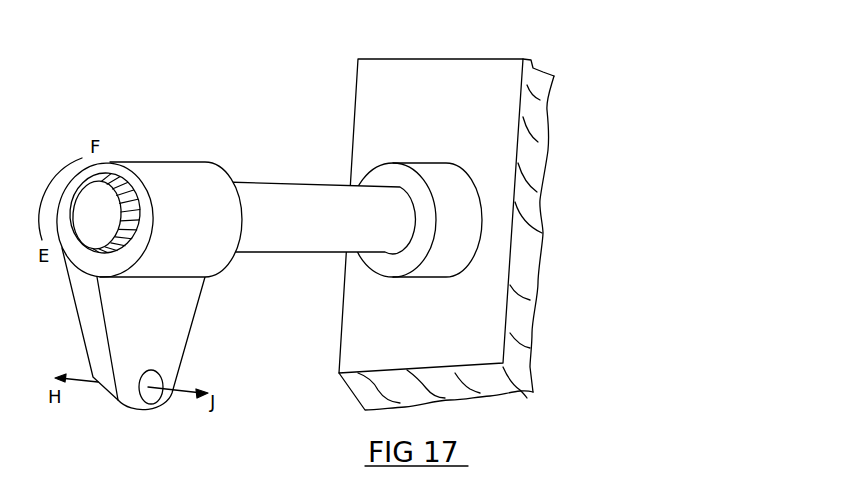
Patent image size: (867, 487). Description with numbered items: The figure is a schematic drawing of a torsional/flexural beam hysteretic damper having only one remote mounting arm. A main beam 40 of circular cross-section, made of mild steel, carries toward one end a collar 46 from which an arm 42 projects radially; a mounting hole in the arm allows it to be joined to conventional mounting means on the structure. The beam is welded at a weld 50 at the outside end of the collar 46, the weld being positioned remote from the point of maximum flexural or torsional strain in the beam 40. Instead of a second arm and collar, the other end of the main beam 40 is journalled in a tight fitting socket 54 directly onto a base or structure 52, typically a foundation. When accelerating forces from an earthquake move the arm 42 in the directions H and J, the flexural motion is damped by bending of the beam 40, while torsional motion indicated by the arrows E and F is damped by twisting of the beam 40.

The main beam 40 is at (295, 190).
The arm 42 is at (122, 308).
The collar 46 is at (202, 173).
The weld 50 is at (130, 190).
The base or structure 52 is at (480, 83).
The tight fitting socket 54 is at (533, 210).